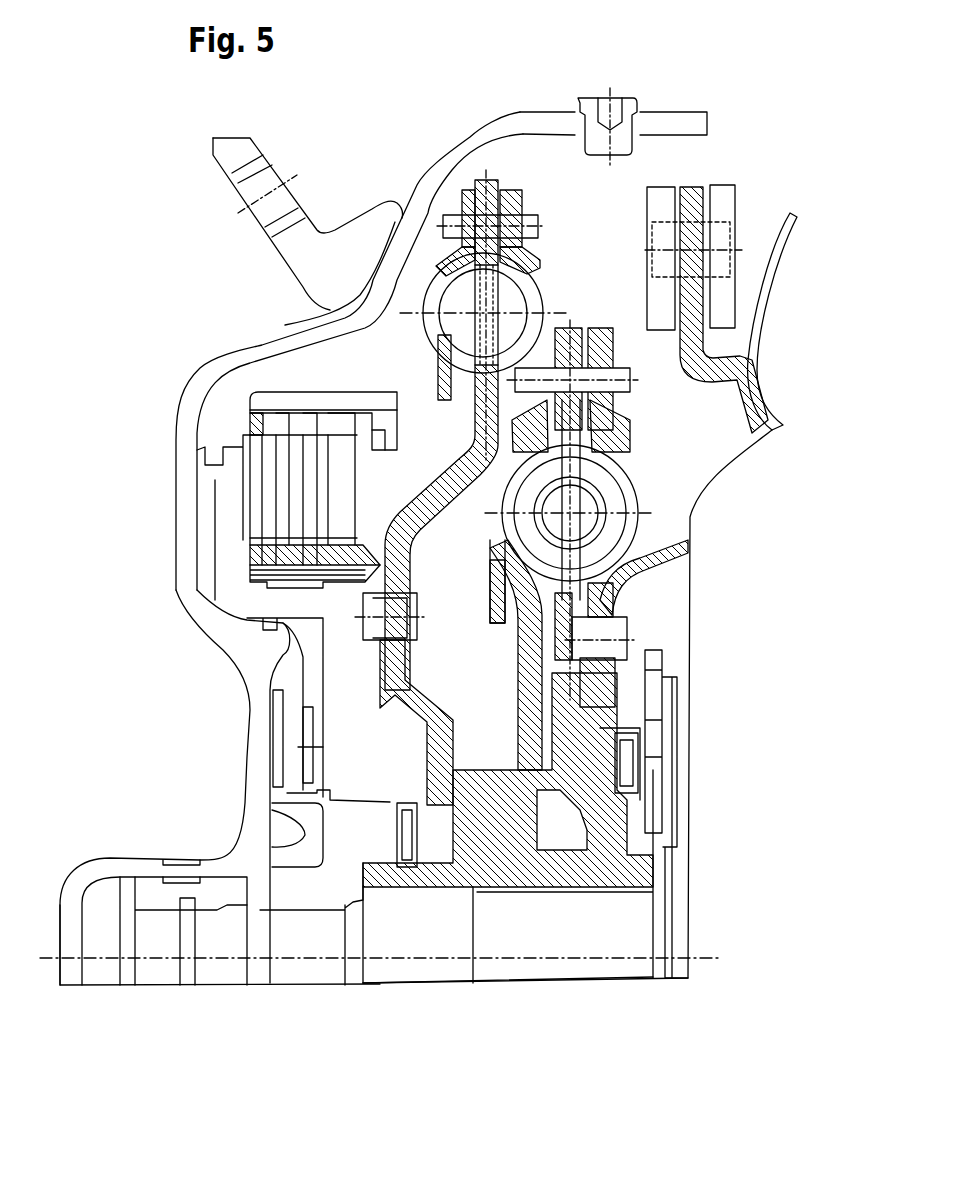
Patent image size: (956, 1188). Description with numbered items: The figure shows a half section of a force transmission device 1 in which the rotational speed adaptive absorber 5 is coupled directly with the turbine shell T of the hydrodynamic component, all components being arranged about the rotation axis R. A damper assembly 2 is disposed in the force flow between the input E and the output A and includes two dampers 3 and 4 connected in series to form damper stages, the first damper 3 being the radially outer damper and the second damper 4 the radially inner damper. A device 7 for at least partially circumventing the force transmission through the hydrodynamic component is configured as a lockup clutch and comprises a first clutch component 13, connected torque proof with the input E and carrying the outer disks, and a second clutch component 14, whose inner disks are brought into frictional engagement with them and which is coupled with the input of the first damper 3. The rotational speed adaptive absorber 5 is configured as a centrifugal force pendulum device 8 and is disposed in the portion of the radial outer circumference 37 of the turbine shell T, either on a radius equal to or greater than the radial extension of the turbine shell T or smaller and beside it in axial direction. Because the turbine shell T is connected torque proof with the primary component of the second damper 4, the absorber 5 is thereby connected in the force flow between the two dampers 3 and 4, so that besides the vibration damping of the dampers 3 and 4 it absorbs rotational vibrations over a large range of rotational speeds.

The force transmission device 1 is at (667, 74).
The damper assembly 2 is at (515, 173).
The first damper 3 is at (484, 171).
The second damper 4 is at (590, 320).
The rotational speed adaptive absorber 5 is at (706, 277).
The centrifugal force pendulum device 8 is at (715, 170).
The device for at least partially circumventing the force transmission through the h 7 is at (258, 388).
The first clutch component 13 is at (252, 400).
The second clutch component 14 is at (250, 573).
The radial outer circumference 37 is at (780, 238).
The turbine shell T is at (760, 306).
The input E is at (68, 930).
The output A is at (604, 925).
The rotation axis R is at (540, 975).